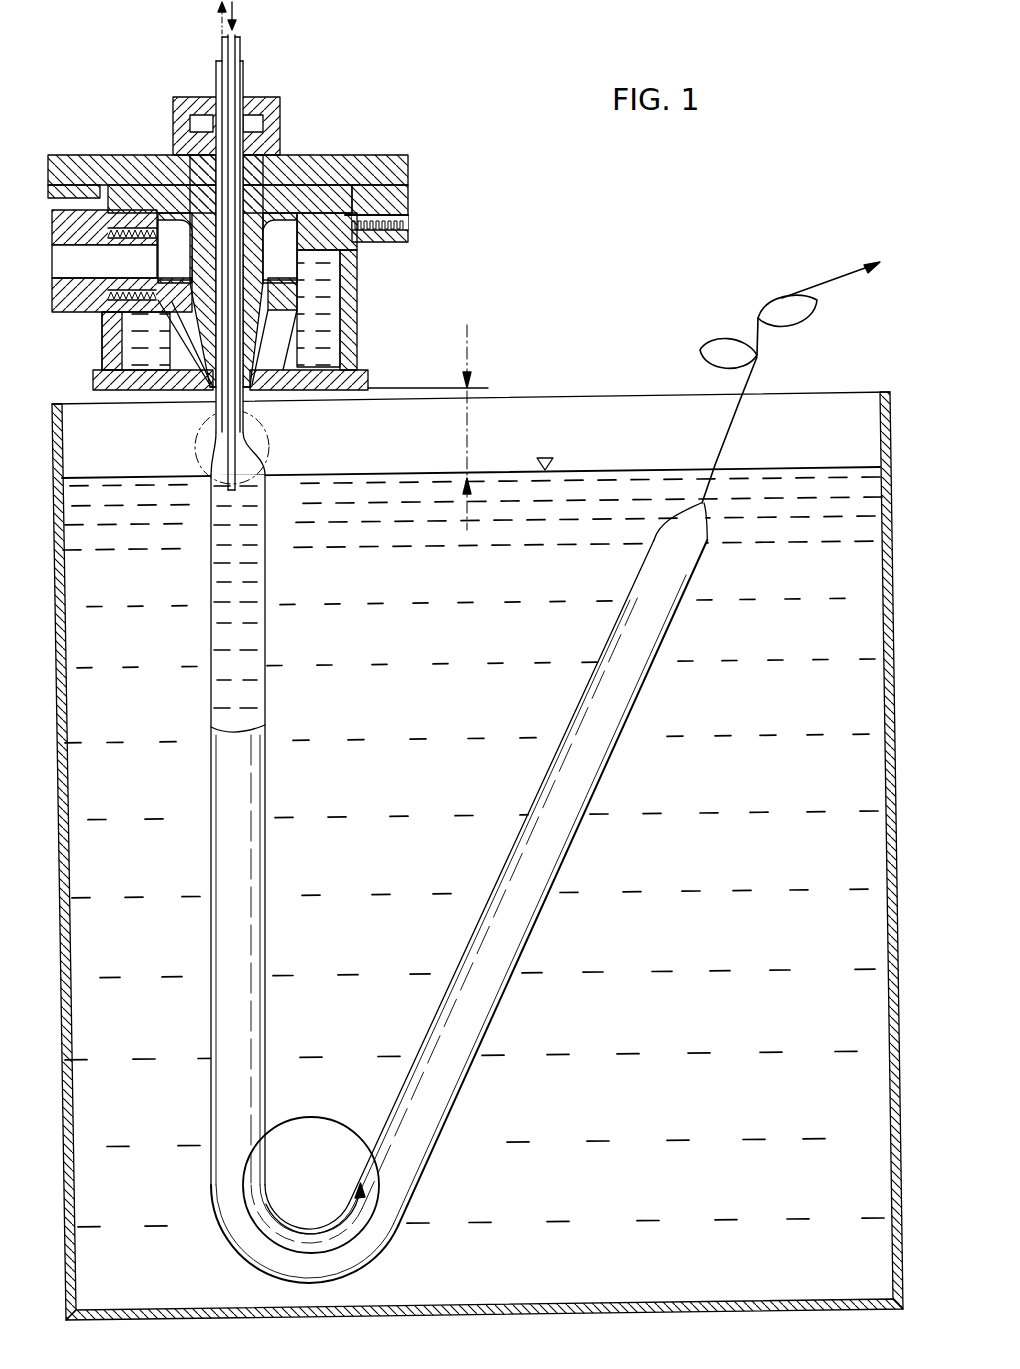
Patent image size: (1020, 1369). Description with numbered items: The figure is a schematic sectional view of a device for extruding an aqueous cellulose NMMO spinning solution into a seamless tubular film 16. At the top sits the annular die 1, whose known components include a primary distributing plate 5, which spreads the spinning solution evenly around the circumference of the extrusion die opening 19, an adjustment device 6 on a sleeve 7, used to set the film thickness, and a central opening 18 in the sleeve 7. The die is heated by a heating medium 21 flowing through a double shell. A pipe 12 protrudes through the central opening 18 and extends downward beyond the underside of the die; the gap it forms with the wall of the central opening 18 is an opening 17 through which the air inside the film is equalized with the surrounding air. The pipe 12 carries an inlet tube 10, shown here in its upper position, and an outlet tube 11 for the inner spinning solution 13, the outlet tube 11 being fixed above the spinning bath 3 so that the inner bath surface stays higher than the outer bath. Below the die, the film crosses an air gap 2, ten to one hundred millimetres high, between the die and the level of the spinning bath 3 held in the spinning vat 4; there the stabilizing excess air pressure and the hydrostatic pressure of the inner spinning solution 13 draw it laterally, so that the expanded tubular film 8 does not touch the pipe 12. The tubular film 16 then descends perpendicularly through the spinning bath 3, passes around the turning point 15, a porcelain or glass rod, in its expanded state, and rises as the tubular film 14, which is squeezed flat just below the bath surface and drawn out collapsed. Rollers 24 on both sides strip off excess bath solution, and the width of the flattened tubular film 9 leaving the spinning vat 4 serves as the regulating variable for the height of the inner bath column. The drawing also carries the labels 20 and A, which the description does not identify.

The annular die 1 is at (347, 267).
The air gap 2 is at (470, 405).
The spinning bath 3 is at (600, 470).
The spinning vat 4 is at (875, 393).
The primary distributing plate 5 is at (285, 292).
The adjustment device 6 is at (390, 178).
The sleeve 7 is at (125, 333).
The expanded tubular film 8 is at (205, 505).
The flattened tubular film 9 is at (835, 270).
The inlet tube 10 is at (235, 45).
The outlet tube 11 is at (221, 44).
The pipe 12 is at (243, 72).
The inner spinning solution 13 is at (222, 635).
The upward traveling tubular film 14 is at (565, 845).
The turning point 15 is at (322, 1133).
The tubular film 16 is at (266, 795).
The opening 17 is at (207, 140).
The central opening 18 is at (248, 150).
The extrusion die opening 19 is at (255, 392).
The tube bend 20 is at (258, 1258).
The heating medium 21 is at (330, 337).
The rollers 24 is at (785, 308).
The region A is at (268, 470).